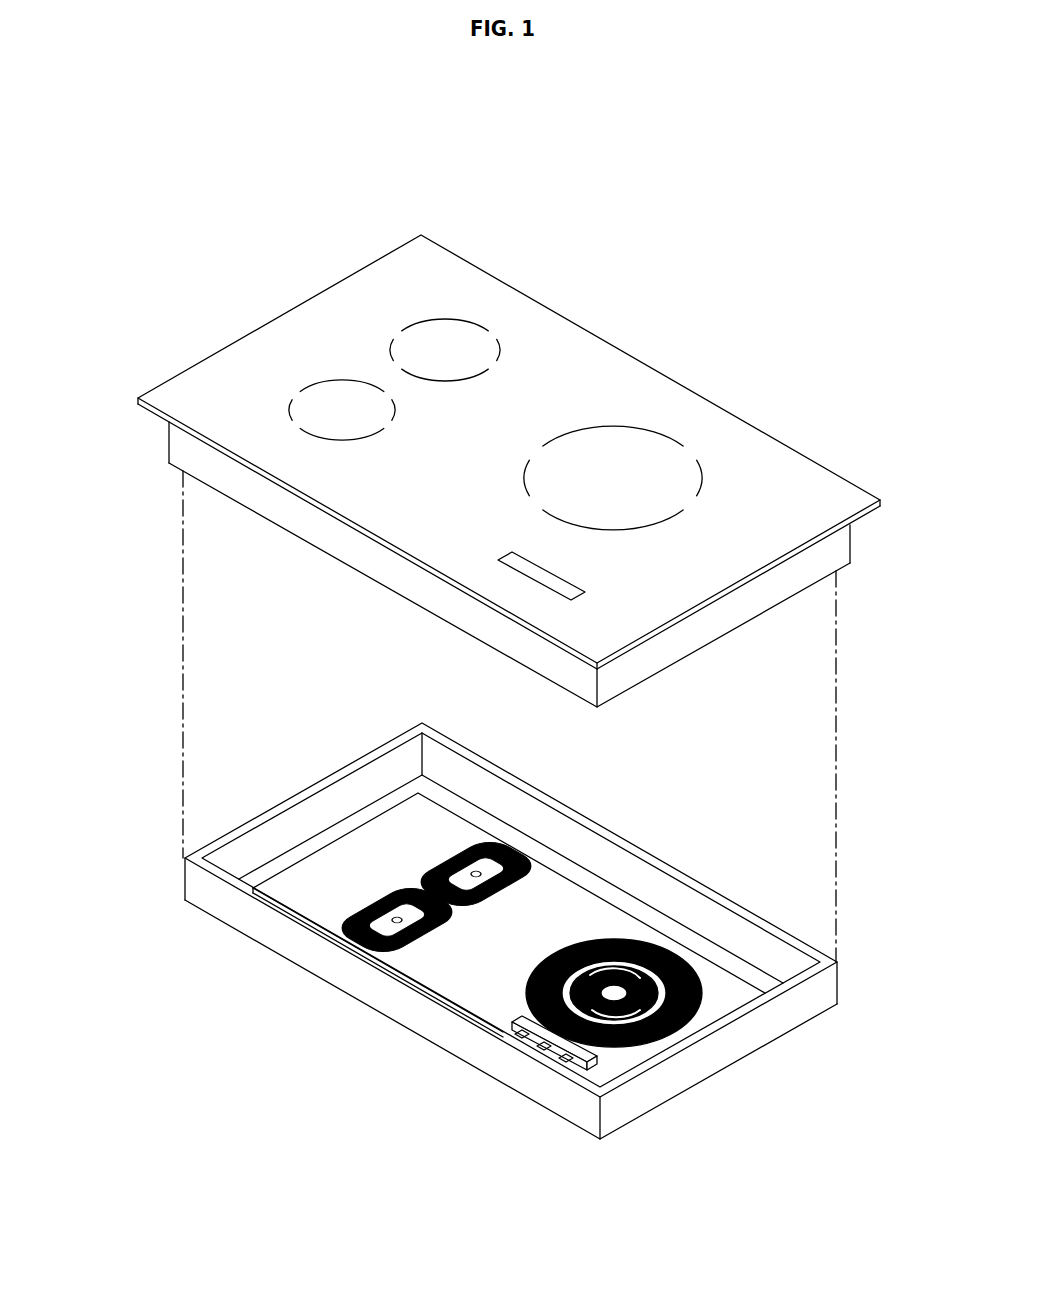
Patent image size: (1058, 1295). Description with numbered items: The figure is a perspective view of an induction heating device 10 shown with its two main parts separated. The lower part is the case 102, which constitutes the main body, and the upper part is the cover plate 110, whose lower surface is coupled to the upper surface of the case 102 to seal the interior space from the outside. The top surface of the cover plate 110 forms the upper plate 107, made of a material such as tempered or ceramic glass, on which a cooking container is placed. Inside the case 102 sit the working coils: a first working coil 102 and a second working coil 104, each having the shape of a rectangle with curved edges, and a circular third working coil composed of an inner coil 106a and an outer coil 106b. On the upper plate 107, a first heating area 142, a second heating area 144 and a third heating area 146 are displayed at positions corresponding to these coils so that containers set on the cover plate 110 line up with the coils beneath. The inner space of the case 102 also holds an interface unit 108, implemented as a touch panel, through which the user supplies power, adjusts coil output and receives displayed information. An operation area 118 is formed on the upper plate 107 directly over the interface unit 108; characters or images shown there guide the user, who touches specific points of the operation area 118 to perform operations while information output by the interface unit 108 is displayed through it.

The induction heating device 10 is at (712, 318).
The case 102 is at (433, 838).
The second working coil 104 is at (355, 883).
The inner coil 106a is at (668, 1034).
The outer coil 106b is at (647, 1003).
The upper plate 107 is at (818, 543).
The interface unit 108 is at (562, 1072).
The cover plate 110 is at (168, 438).
The operation area 118 is at (577, 598).
The first heating area 142 is at (442, 320).
The second heating area 144 is at (345, 378).
The third heating area 146 is at (705, 466).